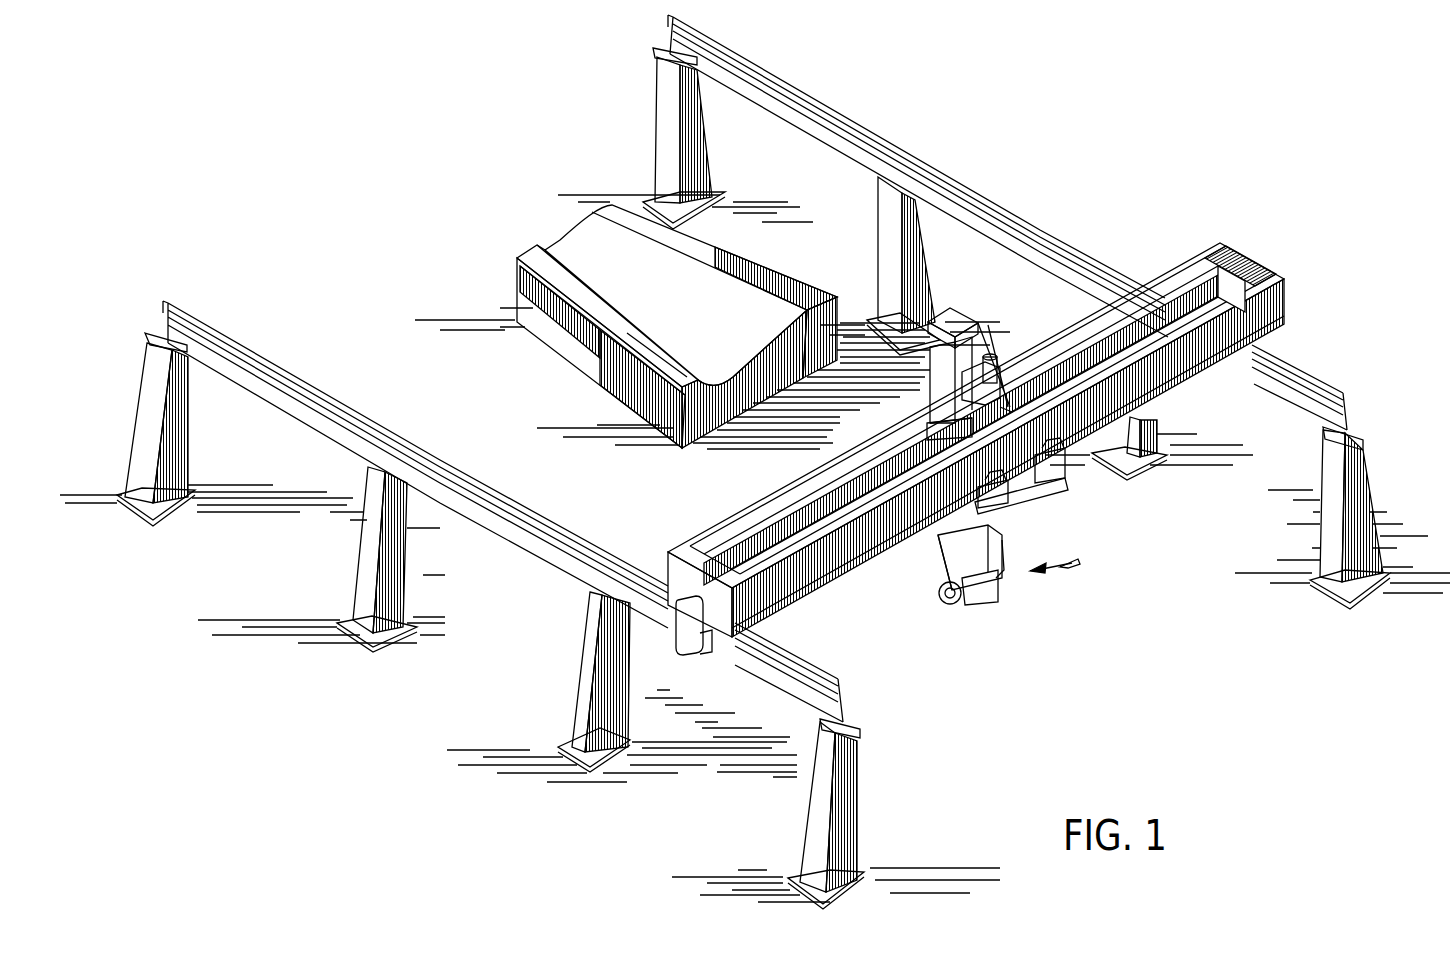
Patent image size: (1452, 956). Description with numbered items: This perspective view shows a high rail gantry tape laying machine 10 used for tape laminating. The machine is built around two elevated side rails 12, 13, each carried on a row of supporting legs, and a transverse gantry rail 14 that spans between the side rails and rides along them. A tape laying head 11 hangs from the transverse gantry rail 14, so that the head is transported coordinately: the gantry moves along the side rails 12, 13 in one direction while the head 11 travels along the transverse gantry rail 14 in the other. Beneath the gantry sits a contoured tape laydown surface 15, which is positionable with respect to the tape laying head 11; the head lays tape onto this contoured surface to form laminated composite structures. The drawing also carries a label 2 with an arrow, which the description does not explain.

The high rail gantry tape laying machine 10 is at (1280, 249).
The tape laying head 11 is at (968, 604).
The side rail 12 is at (1308, 369).
The side rail 13 is at (797, 656).
The transverse gantry rails 14 is at (837, 594).
The contoured tape laydown surface 15 is at (762, 347).
The view direction arrow 2 is at (1067, 555).